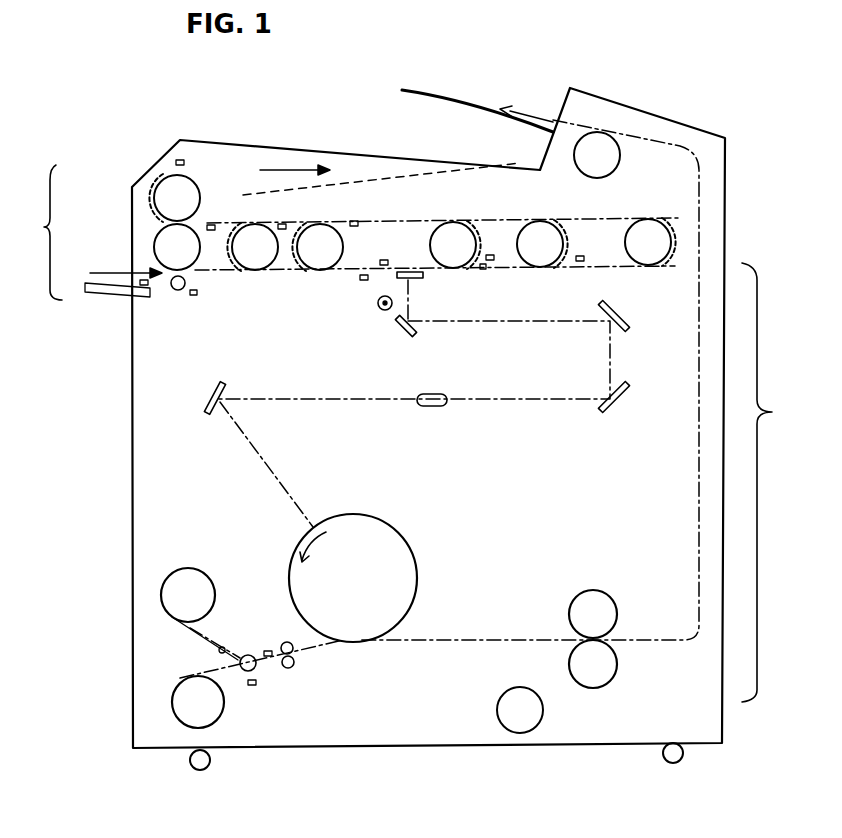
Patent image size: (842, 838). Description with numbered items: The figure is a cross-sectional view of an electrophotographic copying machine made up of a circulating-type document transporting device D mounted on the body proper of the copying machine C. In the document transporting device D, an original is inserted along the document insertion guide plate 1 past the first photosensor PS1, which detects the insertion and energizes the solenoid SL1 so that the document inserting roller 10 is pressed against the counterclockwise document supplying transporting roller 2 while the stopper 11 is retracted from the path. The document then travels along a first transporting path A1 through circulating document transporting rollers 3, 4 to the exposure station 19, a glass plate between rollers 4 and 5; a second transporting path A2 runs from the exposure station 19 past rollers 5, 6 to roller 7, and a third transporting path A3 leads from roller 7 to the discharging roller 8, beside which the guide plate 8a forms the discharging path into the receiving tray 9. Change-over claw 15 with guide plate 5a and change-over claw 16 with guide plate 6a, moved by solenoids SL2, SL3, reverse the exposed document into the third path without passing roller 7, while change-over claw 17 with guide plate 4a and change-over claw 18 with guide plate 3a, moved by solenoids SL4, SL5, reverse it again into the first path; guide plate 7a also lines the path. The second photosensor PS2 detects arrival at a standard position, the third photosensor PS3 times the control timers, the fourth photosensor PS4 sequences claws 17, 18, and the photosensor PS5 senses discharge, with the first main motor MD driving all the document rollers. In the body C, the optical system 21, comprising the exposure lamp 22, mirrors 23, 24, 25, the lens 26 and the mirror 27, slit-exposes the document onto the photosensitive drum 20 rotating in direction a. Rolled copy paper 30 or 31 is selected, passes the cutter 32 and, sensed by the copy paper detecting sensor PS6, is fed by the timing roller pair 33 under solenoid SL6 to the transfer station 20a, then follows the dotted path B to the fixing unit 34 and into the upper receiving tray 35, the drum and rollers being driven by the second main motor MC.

The document insertion guide plate 1 is at (100, 290).
The document supplying transporting roller 2 is at (155, 242).
The circulating document transporting roller 3 is at (257, 262).
The guide plate 3a is at (237, 270).
The circulating document transporting roller 4 is at (322, 255).
The guide plate 4a is at (296, 262).
The circulating document transporting roller 5 is at (452, 240).
The guide plate 5a is at (480, 236).
The circulating document transporting roller 6 is at (538, 240).
The guide plate 6a is at (566, 238).
The circulating document transporting roller 7 is at (640, 232).
The guide plate 7a is at (668, 228).
The document discharging roller 8 is at (203, 198).
The guide plate 8a is at (150, 188).
The receiving tray 9 is at (352, 185).
The document inserting roller 10 is at (172, 290).
The stopper 11 is at (186, 283).
The change-over claw 15 is at (484, 270).
The change-over claw 16 is at (566, 268).
The change-over claw 17 is at (303, 229).
The change-over claw 18 is at (230, 228).
The exposure station 19 is at (423, 277).
The photosensitive drum 20 is at (375, 568).
The transfer station 20a is at (358, 644).
The optical system 21 is at (526, 379).
The exposure lamp 22 is at (393, 303).
The mirror 23 is at (405, 334).
The mirror 24 is at (628, 330).
The mirror 25 is at (605, 412).
The lens 26 is at (440, 406).
The mirror 27 is at (205, 420).
The copy paper roll 30 is at (186, 568).
The copy paper roll 31 is at (172, 712).
The cutter 32 is at (245, 655).
The timing roller pair 33 is at (292, 668).
The fixing unit 34 is at (592, 592).
The receiving tray 35 is at (430, 98).
The first transporting path A1 is at (281, 272).
The second transporting path A2 is at (526, 266).
The third transporting path A3 is at (393, 223).
The copy paper transport path B is at (484, 640).
The body proper of the copying machine C is at (767, 482).
The document transporting device D is at (41, 232).
The first photosensor PS1 is at (144, 290).
The second photosensor PS2 is at (364, 280).
The third photosensor PS3 is at (388, 262).
The fourth photosensor PS4 is at (355, 226).
The photosensor PS5 is at (176, 160).
The copy paper detecting sensor PS6 is at (268, 650).
The solenoid SL1 is at (193, 296).
The solenoid SL2 is at (492, 255).
The solenoid SL3 is at (590, 250).
The solenoid SL4 is at (290, 219).
The solenoid SL5 is at (216, 225).
The solenoid SL6 is at (252, 686).
The first main motor MD is at (599, 155).
The second main motor MC is at (522, 710).
The drum rotation direction a is at (317, 547).